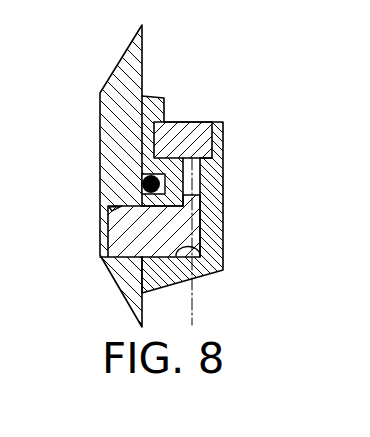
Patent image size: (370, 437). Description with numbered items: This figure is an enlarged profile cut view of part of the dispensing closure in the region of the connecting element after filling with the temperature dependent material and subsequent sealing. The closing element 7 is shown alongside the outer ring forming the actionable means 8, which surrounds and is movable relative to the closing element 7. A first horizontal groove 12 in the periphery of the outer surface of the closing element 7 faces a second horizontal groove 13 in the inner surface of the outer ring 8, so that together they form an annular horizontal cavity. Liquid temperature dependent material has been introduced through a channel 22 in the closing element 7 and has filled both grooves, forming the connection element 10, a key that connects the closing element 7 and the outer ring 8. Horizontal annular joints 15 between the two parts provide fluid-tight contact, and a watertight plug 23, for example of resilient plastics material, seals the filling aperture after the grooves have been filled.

The closing element 7 is at (213, 200).
The actionable means 8 is at (108, 115).
The connection element 10 is at (112, 240).
The first horizontal groove 12 is at (198, 253).
The second horizontal groove 13 is at (116, 208).
The horizontal annular joint 15 is at (142, 185).
The channel 22 is at (193, 295).
The plug 23 is at (197, 130).